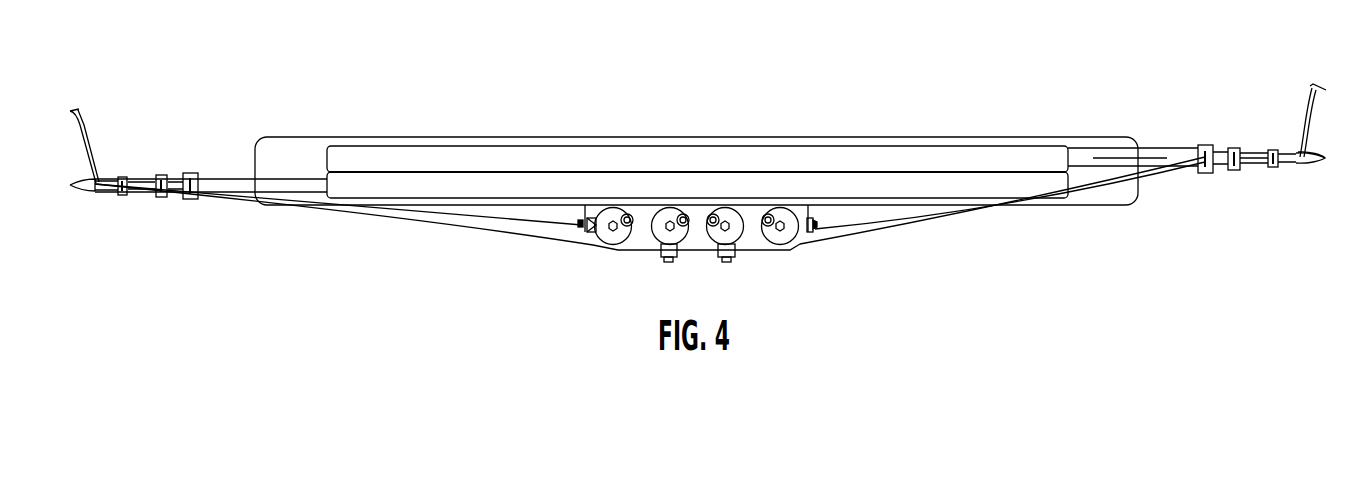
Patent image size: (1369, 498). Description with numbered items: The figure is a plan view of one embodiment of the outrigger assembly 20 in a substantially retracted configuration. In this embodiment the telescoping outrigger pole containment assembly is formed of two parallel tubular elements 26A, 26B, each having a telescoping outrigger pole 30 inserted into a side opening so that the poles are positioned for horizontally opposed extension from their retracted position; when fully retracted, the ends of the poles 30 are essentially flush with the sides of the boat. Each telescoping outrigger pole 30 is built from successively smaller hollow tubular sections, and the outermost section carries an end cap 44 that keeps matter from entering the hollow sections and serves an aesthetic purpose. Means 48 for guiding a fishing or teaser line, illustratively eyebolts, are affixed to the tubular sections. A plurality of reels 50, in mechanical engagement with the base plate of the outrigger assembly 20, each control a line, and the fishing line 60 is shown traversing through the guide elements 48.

The outrigger assembly 20 is at (597, 127).
The tubular element 26A is at (370, 152).
The tubular element 26B is at (387, 188).
The telescoping outrigger pole 30 is at (211, 205).
The end cap 44 is at (1310, 166).
The means for guiding a fishing or teaser line 48 is at (1300, 150).
The reel 50 is at (622, 235).
The fishing line 60 is at (923, 218).